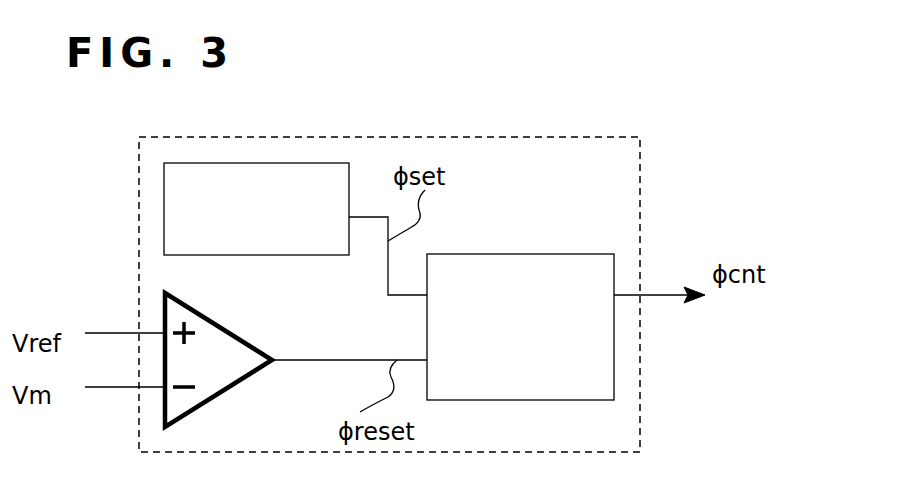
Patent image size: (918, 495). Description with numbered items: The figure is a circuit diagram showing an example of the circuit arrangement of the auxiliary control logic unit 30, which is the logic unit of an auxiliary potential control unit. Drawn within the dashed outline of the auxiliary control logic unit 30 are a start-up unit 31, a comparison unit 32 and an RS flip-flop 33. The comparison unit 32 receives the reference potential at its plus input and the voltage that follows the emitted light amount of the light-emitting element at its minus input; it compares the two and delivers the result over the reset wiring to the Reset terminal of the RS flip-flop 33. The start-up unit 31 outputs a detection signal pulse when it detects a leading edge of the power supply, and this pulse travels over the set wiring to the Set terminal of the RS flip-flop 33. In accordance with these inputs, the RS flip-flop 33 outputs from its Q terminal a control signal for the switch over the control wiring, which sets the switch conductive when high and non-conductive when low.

The auxiliary control logic unit 30 is at (517, 136).
The start-up unit 31 is at (314, 163).
The comparison unit 32 is at (225, 328).
The RS flip-flop 33 is at (583, 254).